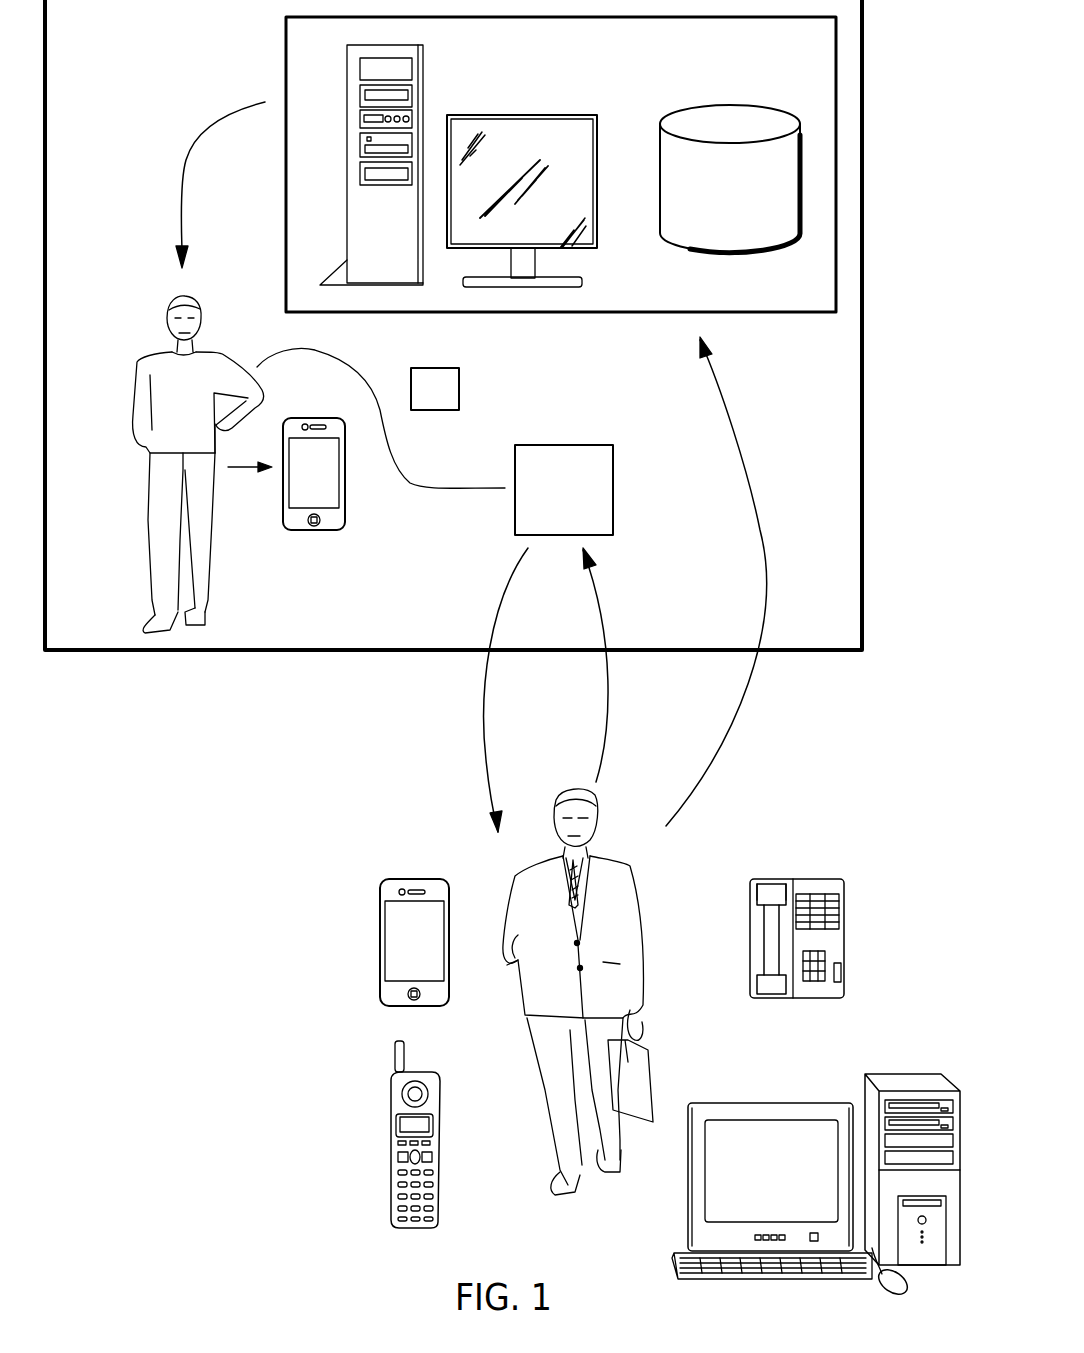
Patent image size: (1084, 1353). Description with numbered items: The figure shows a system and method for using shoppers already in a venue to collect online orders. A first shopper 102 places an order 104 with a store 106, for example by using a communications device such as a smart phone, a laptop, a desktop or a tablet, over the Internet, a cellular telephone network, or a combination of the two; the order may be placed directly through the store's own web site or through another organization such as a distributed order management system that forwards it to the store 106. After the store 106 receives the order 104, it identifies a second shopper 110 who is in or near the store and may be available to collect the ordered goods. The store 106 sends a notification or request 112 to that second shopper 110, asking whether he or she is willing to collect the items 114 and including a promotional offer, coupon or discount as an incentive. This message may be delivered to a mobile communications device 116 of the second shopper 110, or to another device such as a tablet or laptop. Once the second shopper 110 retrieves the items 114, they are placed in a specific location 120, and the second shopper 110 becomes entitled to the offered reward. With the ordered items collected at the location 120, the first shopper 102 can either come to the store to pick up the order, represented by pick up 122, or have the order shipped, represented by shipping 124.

The first shopper 102 is at (545, 1055).
The order 104 is at (727, 706).
The store 106 is at (145, 51).
The second shopper 110 is at (147, 500).
The notification or request 112 is at (180, 172).
The items 114 is at (459, 388).
The mobile communications device 116 is at (296, 533).
The specific location 120 is at (614, 488).
The pick up 122 is at (612, 686).
The shipping 124 is at (488, 703).